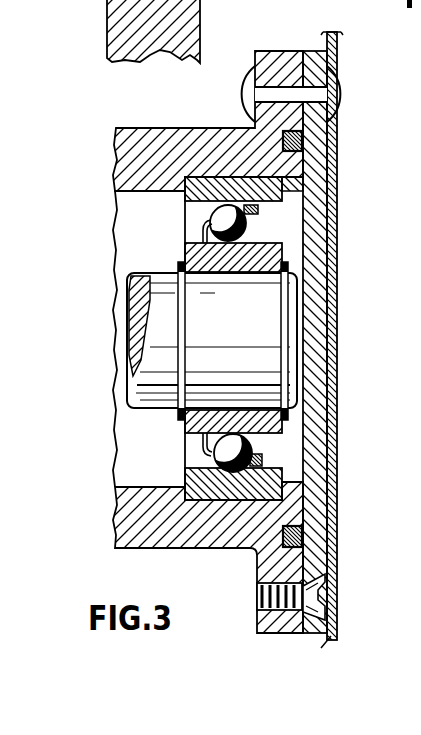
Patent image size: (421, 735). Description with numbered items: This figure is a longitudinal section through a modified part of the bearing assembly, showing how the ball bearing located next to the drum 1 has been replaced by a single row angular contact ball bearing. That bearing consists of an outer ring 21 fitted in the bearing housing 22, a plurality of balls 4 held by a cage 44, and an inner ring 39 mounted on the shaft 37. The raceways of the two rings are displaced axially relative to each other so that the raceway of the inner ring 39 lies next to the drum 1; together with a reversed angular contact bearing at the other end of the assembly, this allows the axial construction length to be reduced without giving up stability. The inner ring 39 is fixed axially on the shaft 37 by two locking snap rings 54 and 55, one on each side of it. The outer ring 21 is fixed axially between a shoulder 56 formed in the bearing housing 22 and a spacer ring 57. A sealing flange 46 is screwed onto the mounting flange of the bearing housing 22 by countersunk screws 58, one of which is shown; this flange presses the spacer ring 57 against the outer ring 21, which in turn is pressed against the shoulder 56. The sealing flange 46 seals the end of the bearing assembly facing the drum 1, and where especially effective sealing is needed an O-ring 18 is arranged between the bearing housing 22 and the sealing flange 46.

The drum 1 is at (337, 337).
The balls 4 is at (282, 212).
The O-ring 18 is at (303, 535).
The outer ring 21 is at (200, 197).
The bearing housing 22 is at (135, 140).
The shaft 37 is at (165, 322).
The inner ring 39 is at (290, 254).
The cage 44 is at (205, 232).
The sealing flange 46 is at (317, 302).
The locking snap ring 54 is at (178, 413).
The locking snap ring 55 is at (283, 413).
The shoulder 56 is at (185, 178).
The spacer ring 57 is at (297, 183).
The countersunk screws 58 is at (313, 583).